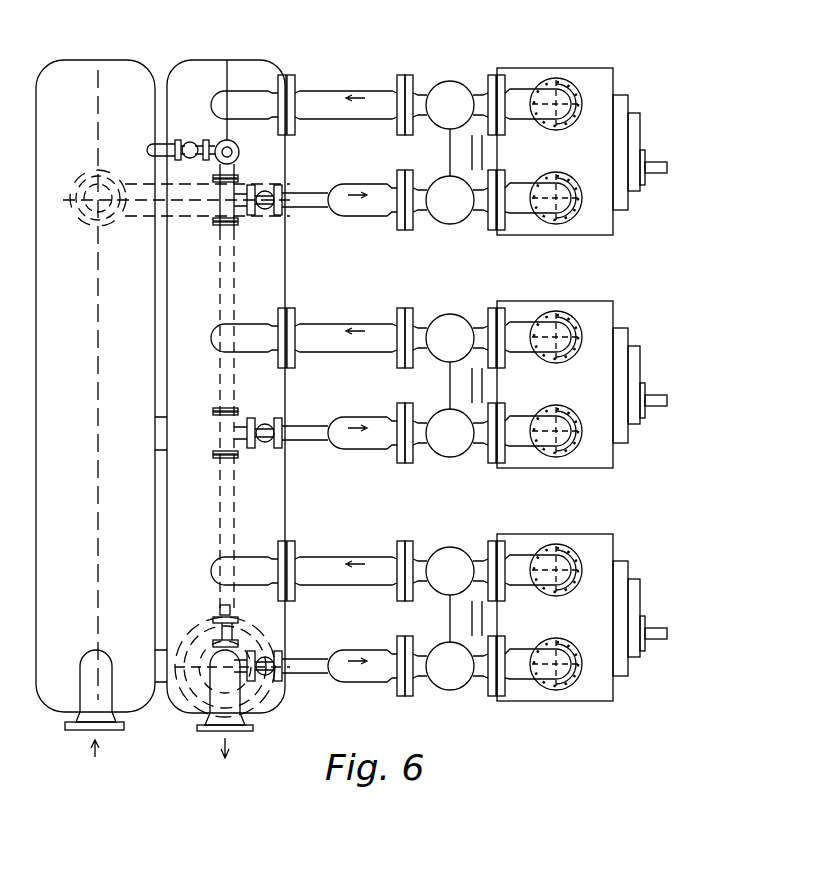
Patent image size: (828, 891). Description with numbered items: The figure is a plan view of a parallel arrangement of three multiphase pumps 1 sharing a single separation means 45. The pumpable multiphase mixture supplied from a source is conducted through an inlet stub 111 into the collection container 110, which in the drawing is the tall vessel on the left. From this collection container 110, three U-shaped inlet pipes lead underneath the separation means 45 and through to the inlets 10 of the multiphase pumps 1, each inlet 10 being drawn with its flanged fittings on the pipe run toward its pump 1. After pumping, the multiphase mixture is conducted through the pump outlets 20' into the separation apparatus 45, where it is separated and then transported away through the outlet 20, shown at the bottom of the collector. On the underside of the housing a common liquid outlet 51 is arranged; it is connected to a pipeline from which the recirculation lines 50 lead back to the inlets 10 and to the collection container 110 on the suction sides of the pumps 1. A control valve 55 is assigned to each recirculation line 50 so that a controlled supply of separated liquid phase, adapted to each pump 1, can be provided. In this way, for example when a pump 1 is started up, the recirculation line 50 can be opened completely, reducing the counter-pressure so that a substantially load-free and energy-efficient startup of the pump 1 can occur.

The multiphase pump 1 is at (723, 165).
The inlet 10 is at (430, 214).
The outlet 20 is at (225, 692).
The pump outlet 20' is at (383, 313).
The separation means 45 is at (300, 473).
The recirculation line 50 is at (157, 82).
The common liquid outlet 51 is at (240, 155).
The control valve 55 is at (190, 140).
The collection container 110 is at (45, 700).
The inlet stub 111 is at (118, 733).